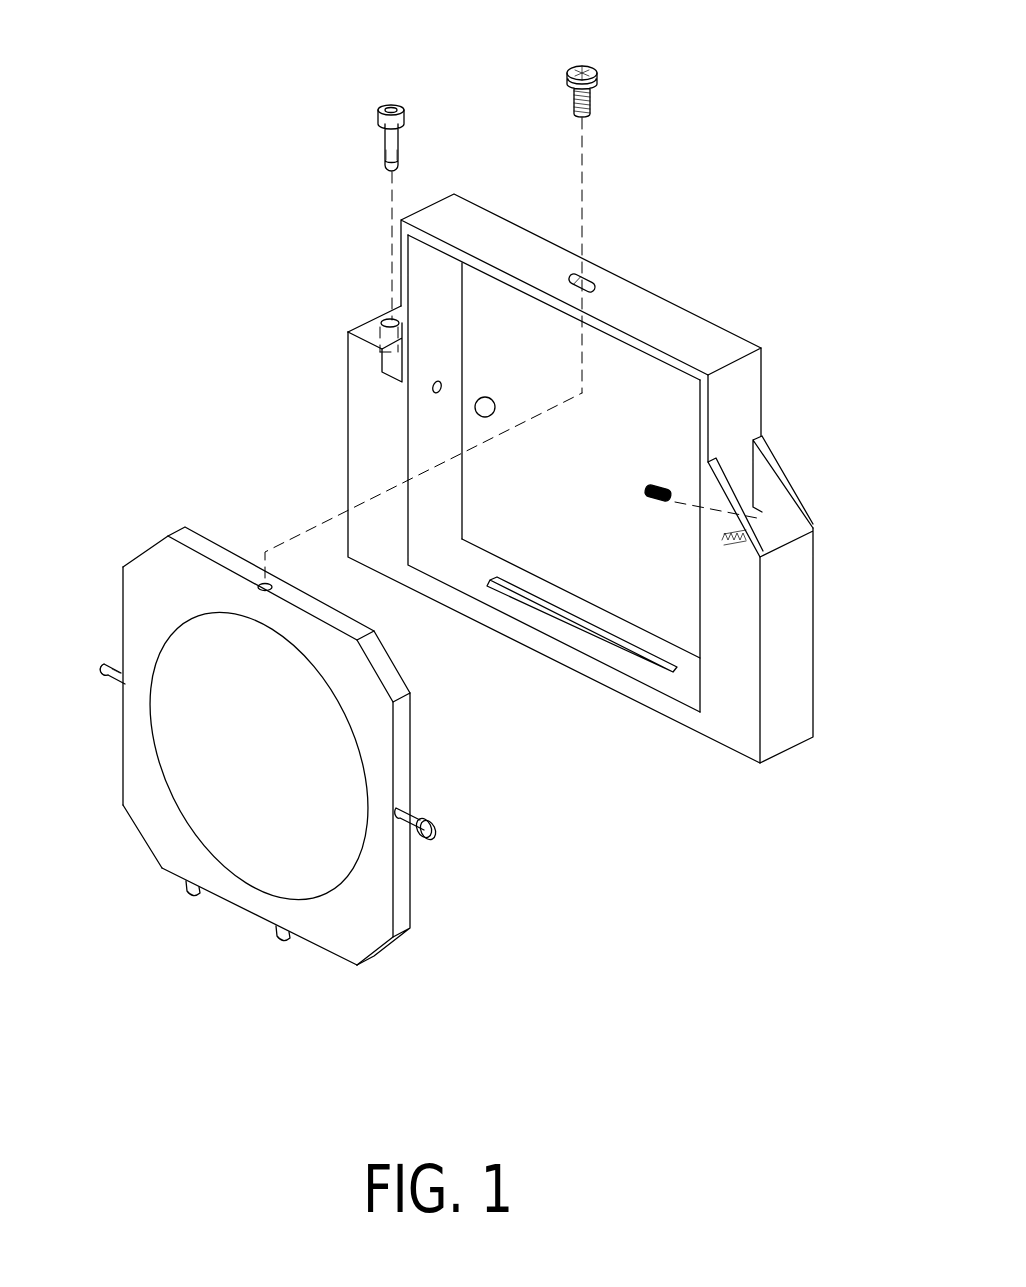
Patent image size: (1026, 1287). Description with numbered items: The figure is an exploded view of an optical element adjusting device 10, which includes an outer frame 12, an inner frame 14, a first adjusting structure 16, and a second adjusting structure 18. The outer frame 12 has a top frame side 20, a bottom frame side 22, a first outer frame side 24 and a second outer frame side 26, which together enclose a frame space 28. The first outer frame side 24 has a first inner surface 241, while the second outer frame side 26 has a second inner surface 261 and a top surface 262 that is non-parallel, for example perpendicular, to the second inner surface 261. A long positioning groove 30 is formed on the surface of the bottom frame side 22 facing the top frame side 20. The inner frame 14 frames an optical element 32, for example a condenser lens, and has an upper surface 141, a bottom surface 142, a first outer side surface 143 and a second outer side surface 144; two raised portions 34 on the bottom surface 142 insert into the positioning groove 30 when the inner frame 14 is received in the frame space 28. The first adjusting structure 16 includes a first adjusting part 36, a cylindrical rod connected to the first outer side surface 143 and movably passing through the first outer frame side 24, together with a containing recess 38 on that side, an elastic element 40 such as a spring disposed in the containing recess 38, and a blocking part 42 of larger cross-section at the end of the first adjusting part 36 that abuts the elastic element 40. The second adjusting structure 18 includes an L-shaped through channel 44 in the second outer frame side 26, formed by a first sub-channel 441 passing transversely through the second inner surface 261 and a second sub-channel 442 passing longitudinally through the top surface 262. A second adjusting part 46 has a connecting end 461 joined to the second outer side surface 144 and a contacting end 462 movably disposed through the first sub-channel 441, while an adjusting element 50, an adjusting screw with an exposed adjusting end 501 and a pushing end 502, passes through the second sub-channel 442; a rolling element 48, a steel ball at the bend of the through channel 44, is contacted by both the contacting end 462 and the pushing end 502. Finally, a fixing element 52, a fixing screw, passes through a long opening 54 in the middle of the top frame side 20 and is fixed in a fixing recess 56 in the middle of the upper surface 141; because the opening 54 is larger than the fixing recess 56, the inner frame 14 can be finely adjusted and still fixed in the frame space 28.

The optical element adjusting device 10 is at (169, 16).
The outer frame 12 is at (636, 707).
The inner frame 14 is at (332, 930).
The first adjusting structure 16 is at (660, 695).
The second adjusting structure 18 is at (276, 383).
The top frame side 20 is at (661, 313).
The bottom frame side 22 is at (571, 656).
The first outer frame side 24 is at (783, 650).
The second outer frame side 26 is at (364, 460).
The frame space 28 is at (678, 402).
The positioning groove 30 is at (537, 604).
The optical element 32 is at (177, 757).
The raised portions 34 is at (193, 900).
The first adjusting part 36 is at (421, 812).
The containing recess 38 is at (762, 530).
The elastic element 40 is at (670, 489).
The blocking part 42 is at (435, 834).
The through channel 44 is at (375, 349).
The second adjusting part 46 is at (108, 668).
The rolling element 48 is at (476, 409).
The adjusting element 50 is at (388, 139).
The fixing element 52 is at (600, 78).
The opening 54 is at (588, 288).
The fixing recess 56 is at (265, 583).
The upper surface 141 is at (206, 545).
The bottom surface 142 is at (239, 918).
The first outer side surface 143 is at (408, 902).
The second outer side surface 144 is at (113, 593).
The first inner surface 241 is at (696, 577).
The second inner surface 261 is at (459, 499).
The top surface 262 is at (369, 314).
The first sub-channel 441 is at (441, 385).
The second sub-channel 442 is at (400, 326).
The connecting end 461 is at (115, 680).
The contacting end 462 is at (103, 666).
The adjusting end 501 is at (396, 106).
The pushing end 502 is at (400, 168).